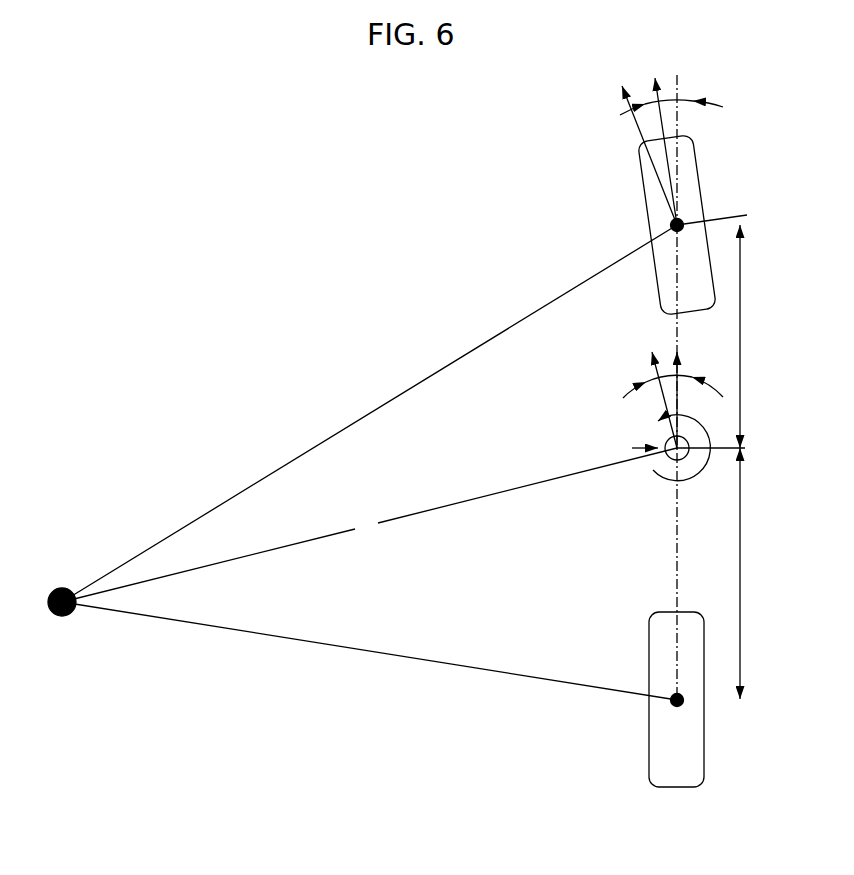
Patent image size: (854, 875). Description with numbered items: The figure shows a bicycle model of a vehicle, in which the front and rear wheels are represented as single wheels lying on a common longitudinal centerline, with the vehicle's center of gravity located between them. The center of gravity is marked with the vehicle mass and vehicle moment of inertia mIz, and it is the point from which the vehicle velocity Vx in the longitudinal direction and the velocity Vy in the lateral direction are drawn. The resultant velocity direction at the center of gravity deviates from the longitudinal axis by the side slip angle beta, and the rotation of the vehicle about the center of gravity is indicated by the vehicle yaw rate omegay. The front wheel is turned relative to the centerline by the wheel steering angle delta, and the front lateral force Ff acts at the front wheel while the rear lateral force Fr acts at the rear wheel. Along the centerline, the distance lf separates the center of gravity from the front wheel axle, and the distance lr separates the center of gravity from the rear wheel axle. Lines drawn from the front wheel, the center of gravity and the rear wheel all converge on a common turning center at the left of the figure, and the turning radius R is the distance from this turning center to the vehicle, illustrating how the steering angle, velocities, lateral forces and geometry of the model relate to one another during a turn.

The turning radius R is at (362, 462).
The front lateral force Ff is at (684, 225).
The rear lateral force Fr is at (684, 699).
The wheel steering angle delta is at (673, 96).
The side slip angle beta is at (676, 400).
The vehicle velocity Vx is at (693, 392).
The lateral velocity Vy is at (630, 450).
The vehicle yaw rate omegay is at (683, 465).
The vehicle mass and moment of inertia mIz is at (665, 453).
The distance between center of gravity and front wheel axle lf is at (753, 336).
The distance between center of gravity and rear wheel axle lr is at (753, 573).